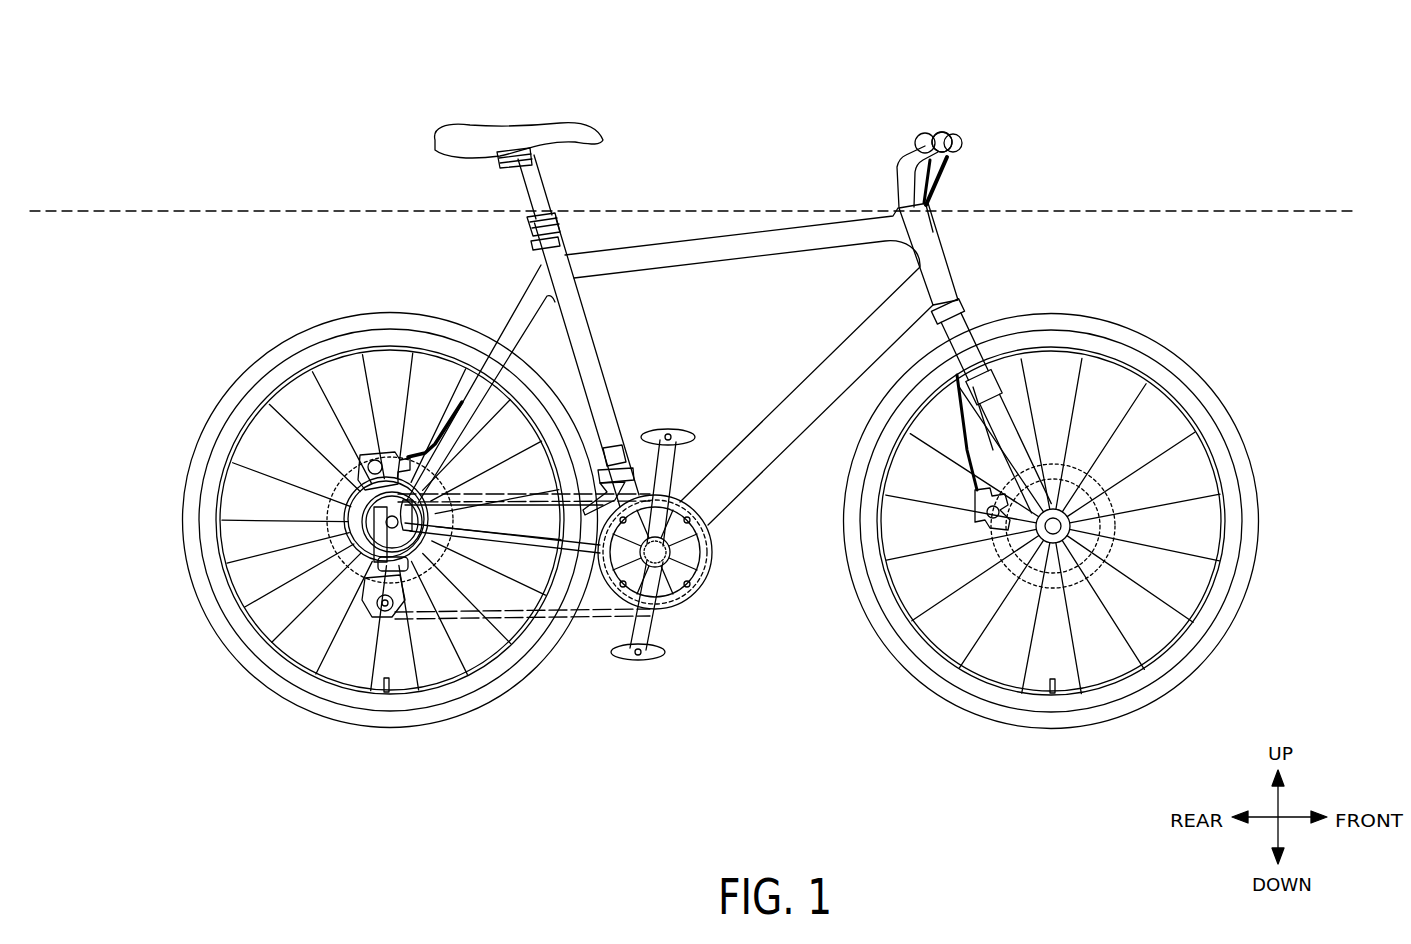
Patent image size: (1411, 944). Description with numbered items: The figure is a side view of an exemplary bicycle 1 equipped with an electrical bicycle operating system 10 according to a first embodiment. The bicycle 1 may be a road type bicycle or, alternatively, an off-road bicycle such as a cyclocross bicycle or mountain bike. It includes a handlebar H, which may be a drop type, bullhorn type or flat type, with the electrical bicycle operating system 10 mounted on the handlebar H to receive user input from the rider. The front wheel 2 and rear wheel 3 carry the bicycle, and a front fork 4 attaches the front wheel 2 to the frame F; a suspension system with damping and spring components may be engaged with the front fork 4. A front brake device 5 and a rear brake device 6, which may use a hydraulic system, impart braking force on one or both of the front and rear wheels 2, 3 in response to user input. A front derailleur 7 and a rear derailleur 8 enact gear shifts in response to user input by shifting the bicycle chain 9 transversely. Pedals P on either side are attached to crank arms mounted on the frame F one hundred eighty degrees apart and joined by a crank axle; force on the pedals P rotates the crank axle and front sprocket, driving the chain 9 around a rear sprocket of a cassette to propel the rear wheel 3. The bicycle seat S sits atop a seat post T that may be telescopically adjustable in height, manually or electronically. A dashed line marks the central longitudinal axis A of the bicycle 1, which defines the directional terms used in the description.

The bicycle 1 is at (1199, 60).
The front wheel 2 is at (1195, 366).
The rear wheel 3 is at (266, 352).
The front fork 4 is at (962, 320).
The front brake device 5 is at (985, 520).
The rear brake device 6 is at (358, 470).
The front derailleur 7 is at (597, 470).
The rear derailleur 8 is at (372, 583).
The bicycle chain 9 is at (597, 622).
The electrical bicycle operating system 10 is at (933, 124).
The central longitudinal axis A is at (176, 210).
The frame F is at (846, 357).
The handlebar H is at (935, 133).
The pedals P is at (638, 661).
The bicycle seat S is at (533, 122).
The seat post T is at (542, 193).